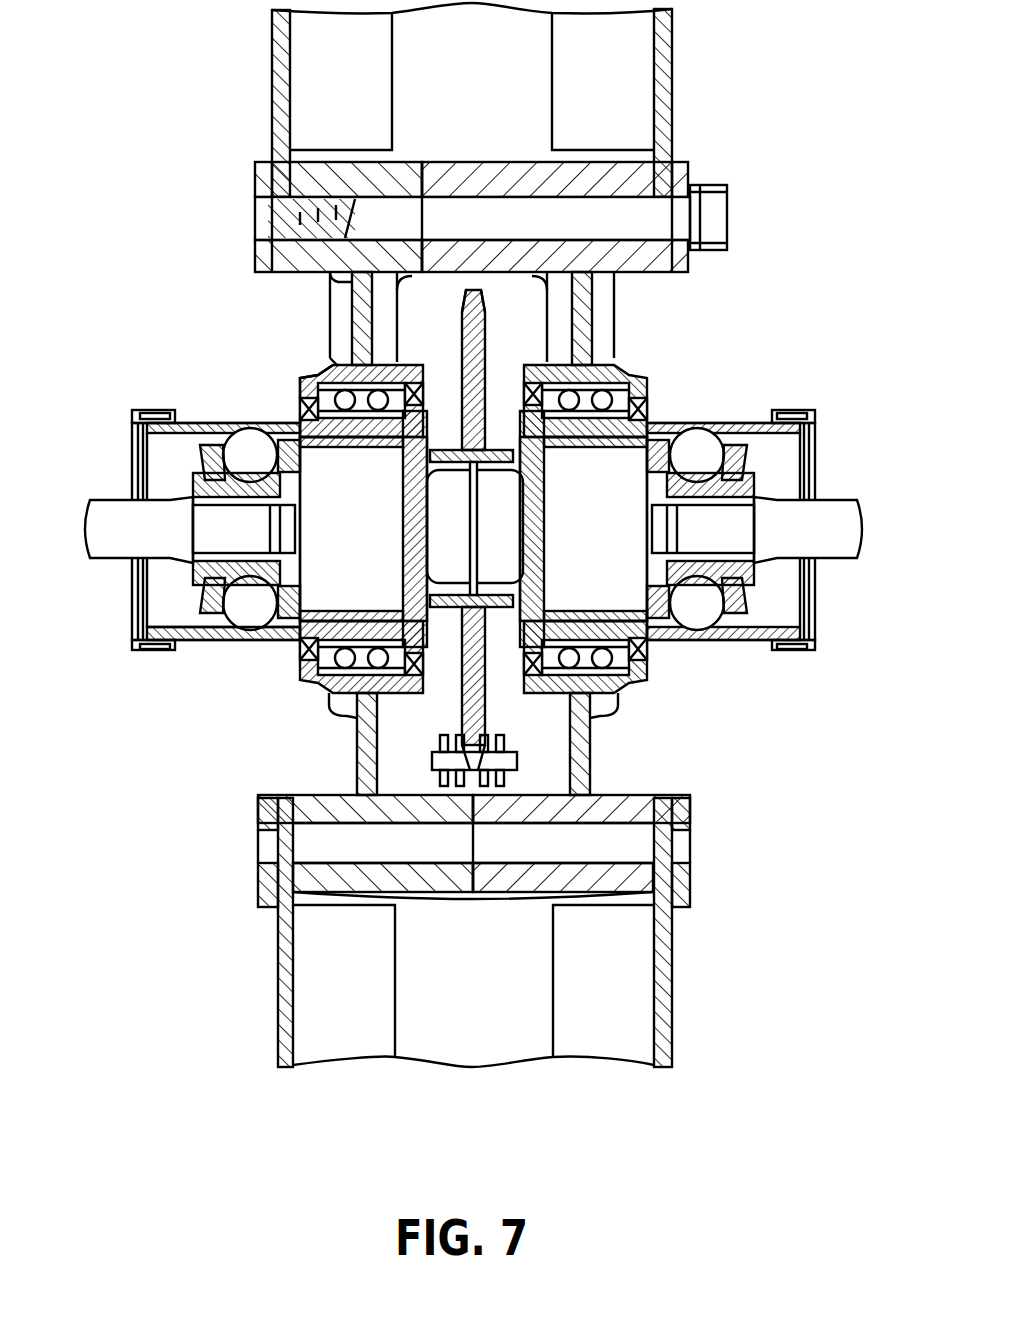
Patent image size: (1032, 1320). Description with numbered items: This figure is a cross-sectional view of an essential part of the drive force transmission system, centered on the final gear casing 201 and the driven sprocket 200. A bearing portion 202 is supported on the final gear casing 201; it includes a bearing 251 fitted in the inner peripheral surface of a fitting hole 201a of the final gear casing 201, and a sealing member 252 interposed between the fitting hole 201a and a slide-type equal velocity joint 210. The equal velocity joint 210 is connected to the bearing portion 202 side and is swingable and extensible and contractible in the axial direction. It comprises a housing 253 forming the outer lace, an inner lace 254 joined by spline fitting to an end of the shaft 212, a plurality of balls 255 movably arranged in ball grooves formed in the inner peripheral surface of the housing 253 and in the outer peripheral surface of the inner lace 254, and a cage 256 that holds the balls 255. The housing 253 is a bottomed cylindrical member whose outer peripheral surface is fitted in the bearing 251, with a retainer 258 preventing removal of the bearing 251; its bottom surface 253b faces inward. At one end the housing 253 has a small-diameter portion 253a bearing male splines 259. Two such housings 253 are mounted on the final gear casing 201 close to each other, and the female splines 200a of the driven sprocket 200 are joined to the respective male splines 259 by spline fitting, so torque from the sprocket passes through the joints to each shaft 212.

The driven sprocket 200 is at (592, 718).
The female splines 200a is at (478, 510).
The final gear casing 201 is at (641, 359).
The fitting hole 201a is at (310, 377).
The bearing portion 202 is at (317, 363).
The slide-type equal velocity joint 210 is at (134, 402).
The shaft 212 is at (110, 503).
The bearing 251 is at (328, 367).
The sealing member 252 is at (298, 410).
The housing 253 is at (172, 627).
The small-diameter portion 253a is at (403, 498).
The bottom surface 253b is at (357, 720).
The inner lace 254 is at (193, 572).
The balls 255 is at (247, 612).
The cage 256 is at (212, 607).
The retainer 258 is at (372, 640).
The male splines 259 is at (476, 512).